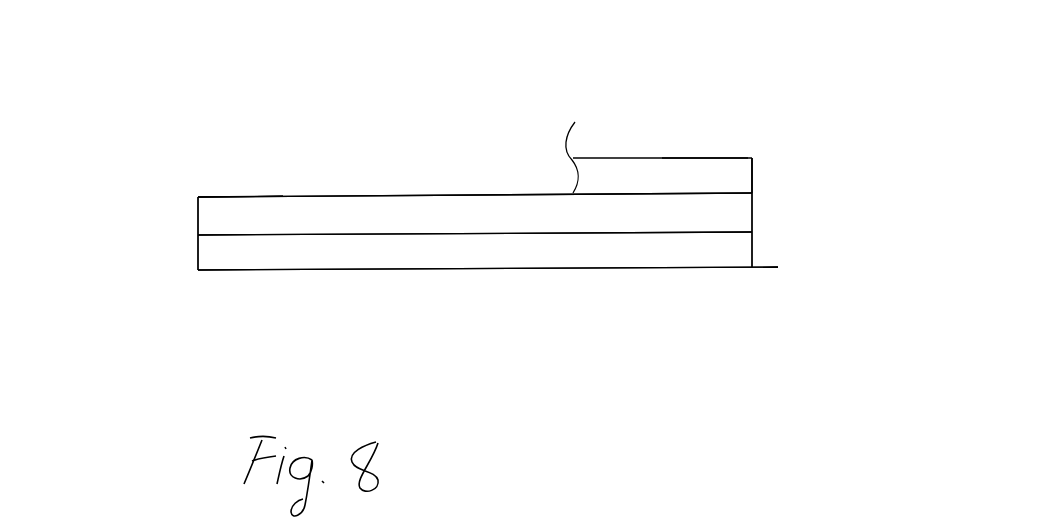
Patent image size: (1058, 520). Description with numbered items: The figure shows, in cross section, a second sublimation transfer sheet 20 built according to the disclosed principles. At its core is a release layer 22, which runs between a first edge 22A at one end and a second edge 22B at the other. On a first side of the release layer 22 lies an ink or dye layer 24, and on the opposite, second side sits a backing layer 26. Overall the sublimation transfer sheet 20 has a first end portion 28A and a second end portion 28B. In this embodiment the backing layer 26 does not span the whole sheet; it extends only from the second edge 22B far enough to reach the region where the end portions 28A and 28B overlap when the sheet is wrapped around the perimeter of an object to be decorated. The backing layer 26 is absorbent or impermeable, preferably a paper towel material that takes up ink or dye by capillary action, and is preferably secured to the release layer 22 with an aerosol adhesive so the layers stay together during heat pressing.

The sublimation transfer sheet 20 is at (379, 65).
The release layer 22 is at (450, 210).
The first edge 22A is at (198, 236).
The second edge 22B is at (752, 208).
The ink or dye layer 24 is at (438, 250).
The backing layer 26 is at (603, 173).
The first end portion 28A is at (283, 178).
The second end portion 28B is at (748, 150).